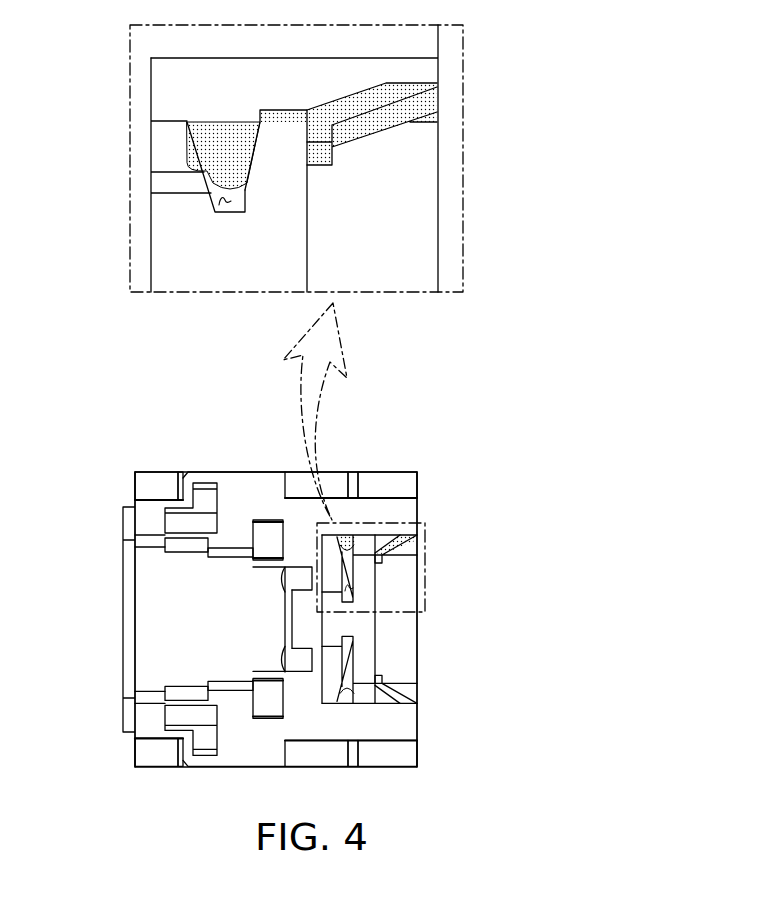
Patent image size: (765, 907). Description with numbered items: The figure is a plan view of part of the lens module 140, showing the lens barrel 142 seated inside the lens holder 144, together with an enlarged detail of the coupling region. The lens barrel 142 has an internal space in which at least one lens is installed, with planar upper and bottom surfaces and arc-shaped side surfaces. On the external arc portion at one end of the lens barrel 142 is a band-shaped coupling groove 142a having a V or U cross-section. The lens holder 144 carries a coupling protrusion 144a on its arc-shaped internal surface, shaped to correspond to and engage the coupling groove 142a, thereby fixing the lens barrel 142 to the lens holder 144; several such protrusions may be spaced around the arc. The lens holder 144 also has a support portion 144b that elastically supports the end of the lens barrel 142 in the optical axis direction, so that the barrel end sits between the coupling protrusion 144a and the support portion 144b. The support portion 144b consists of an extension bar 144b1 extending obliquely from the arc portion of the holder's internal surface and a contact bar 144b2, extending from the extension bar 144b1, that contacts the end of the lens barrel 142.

The lens module 140 is at (206, 461).
The lens barrel 142 is at (178, 262).
The coupling groove 142a is at (222, 201).
The lens holder 144 is at (417, 64).
The coupling protrusion 144a is at (202, 143).
The support portion 144b is at (575, 128).
The extension bar 144b1 is at (367, 102).
The contact bar 144b2 is at (320, 133).